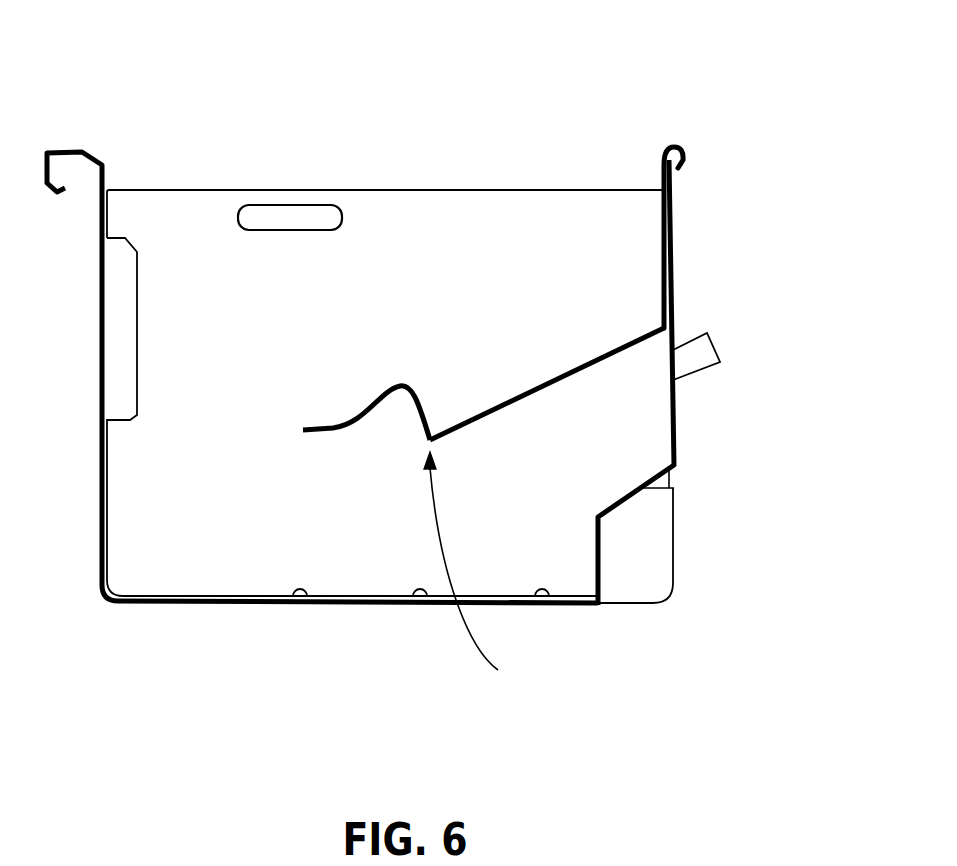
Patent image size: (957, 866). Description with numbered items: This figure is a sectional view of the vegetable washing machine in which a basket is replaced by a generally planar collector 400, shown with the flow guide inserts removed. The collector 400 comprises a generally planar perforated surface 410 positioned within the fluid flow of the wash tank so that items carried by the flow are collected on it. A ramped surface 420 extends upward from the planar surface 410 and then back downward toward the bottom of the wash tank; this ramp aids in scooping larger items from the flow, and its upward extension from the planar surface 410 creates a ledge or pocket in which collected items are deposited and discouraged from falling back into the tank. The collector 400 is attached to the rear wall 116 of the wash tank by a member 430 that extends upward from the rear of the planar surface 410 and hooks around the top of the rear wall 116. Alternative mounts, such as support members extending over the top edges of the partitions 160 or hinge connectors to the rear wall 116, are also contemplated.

The partitioning wall 160 is at (168, 233).
The planar collector 400 is at (483, 568).
The planar perforated surface 410 is at (553, 370).
The ramped surface 420 is at (388, 387).
The member 430 is at (660, 173).
The rear side wall 116 is at (673, 242).